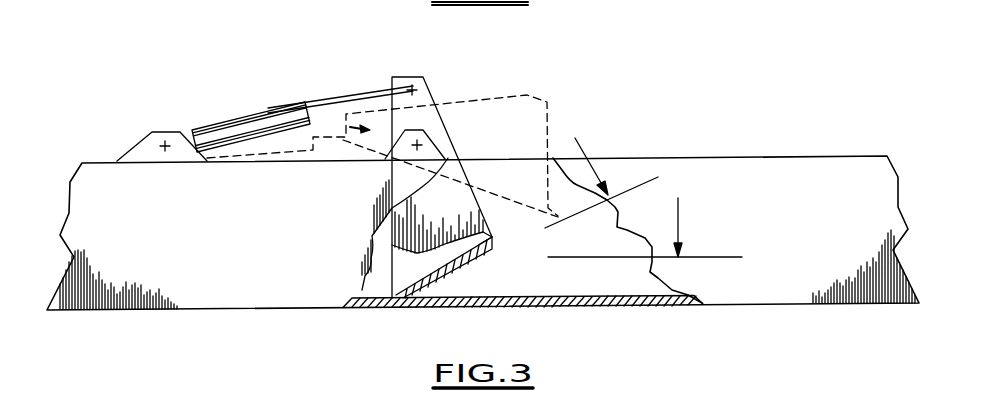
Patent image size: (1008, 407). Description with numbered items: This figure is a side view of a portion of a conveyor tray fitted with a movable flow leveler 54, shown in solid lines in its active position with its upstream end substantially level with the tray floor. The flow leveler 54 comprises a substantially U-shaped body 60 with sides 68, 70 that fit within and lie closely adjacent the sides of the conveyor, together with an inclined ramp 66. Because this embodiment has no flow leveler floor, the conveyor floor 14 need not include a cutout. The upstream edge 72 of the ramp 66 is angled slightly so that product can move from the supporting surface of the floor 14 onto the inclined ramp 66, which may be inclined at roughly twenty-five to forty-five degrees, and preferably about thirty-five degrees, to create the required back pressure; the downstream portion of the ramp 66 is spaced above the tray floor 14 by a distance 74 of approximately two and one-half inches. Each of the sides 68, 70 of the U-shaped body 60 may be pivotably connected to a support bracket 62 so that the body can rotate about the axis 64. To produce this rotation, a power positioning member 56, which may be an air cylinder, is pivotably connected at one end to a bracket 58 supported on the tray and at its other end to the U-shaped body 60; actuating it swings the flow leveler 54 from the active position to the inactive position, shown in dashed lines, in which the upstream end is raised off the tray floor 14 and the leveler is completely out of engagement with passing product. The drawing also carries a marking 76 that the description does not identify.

The conveyor floor 14 is at (400, 303).
The flow leveler 54 is at (320, 79).
The power positioning member 56 is at (236, 118).
The bracket 58 is at (150, 140).
The U-shaped body 60 is at (428, 100).
The support bracket 62 is at (427, 138).
The axis 64 is at (399, 157).
The ramp 66 is at (488, 246).
The side 68 is at (447, 262).
The side 70 is at (432, 218).
The upstream edge 72 is at (392, 297).
The distance 74 is at (678, 350).
The thickness dimension 76 is at (617, 362).